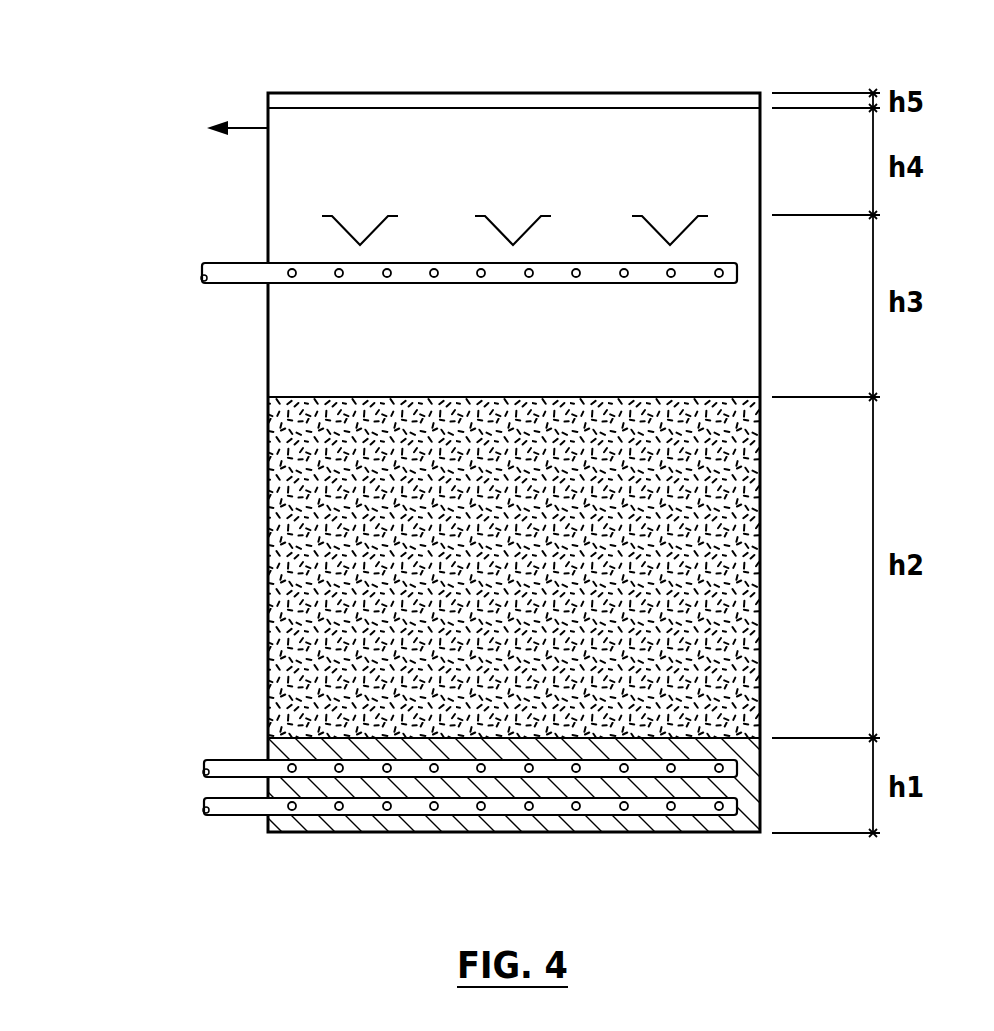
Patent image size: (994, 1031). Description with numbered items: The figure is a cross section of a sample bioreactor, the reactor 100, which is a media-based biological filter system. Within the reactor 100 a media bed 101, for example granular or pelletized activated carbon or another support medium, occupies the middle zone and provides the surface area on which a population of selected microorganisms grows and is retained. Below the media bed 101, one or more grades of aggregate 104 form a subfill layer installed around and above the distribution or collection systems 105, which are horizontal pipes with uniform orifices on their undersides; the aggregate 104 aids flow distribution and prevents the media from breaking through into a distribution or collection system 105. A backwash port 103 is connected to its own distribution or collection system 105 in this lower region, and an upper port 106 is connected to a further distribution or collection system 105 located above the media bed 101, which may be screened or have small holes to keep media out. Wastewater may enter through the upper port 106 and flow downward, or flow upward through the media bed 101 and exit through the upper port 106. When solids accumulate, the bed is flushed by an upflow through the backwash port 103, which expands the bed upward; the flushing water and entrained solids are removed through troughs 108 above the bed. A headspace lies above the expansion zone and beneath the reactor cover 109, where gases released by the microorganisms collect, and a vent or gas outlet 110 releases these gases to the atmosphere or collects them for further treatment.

The reactor 100 is at (178, 530).
The media bed 101 is at (292, 640).
The backwash port 103 is at (203, 762).
The aggregate 104 is at (272, 828).
The distribution or collection system 105 is at (313, 283).
The upper port 106 is at (216, 262).
The troughs 108 is at (330, 225).
The reactor cover 109 is at (459, 98).
The vent or gas outlet 110 is at (247, 128).